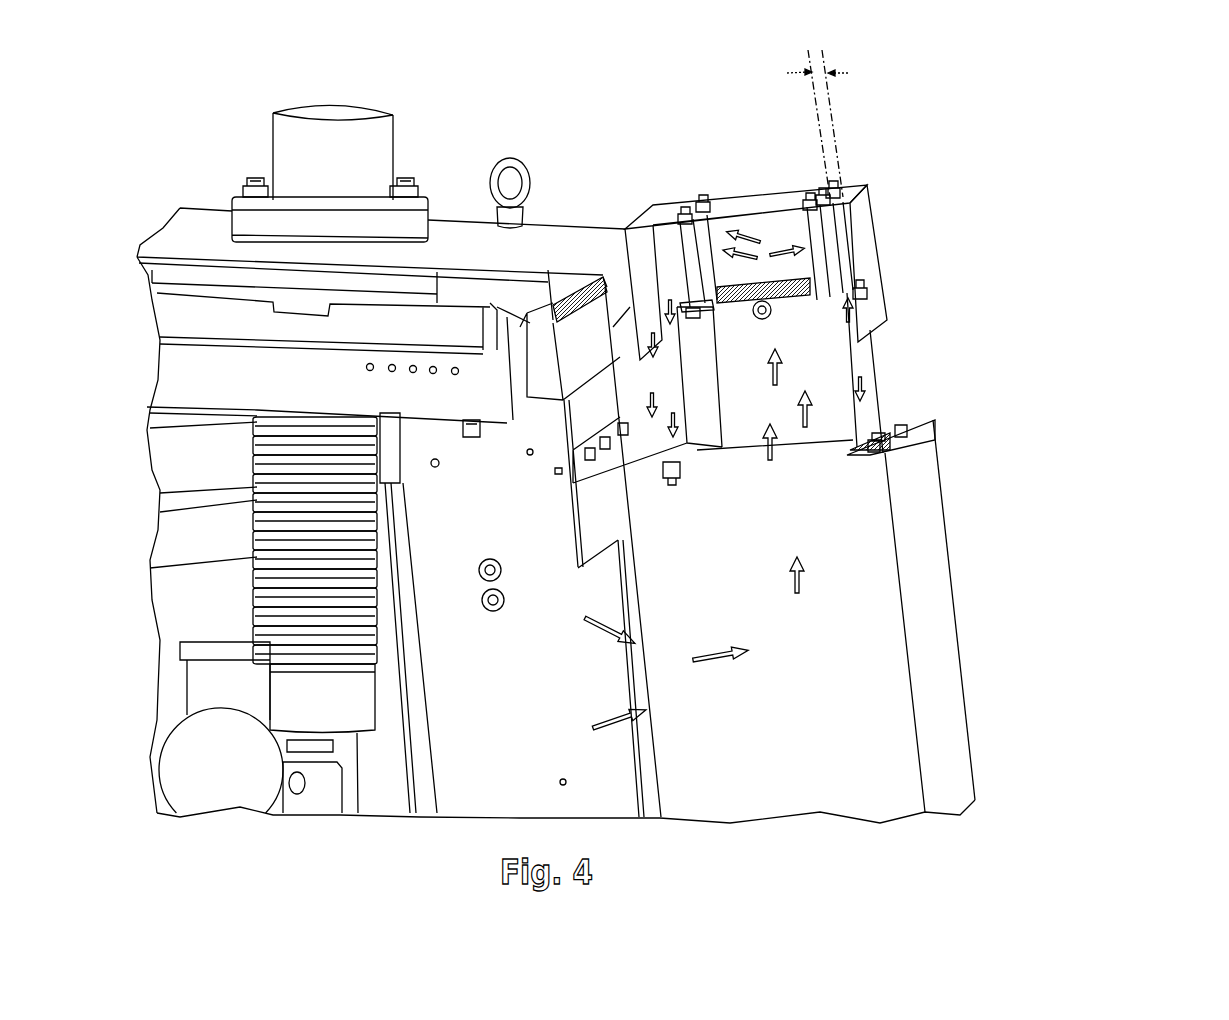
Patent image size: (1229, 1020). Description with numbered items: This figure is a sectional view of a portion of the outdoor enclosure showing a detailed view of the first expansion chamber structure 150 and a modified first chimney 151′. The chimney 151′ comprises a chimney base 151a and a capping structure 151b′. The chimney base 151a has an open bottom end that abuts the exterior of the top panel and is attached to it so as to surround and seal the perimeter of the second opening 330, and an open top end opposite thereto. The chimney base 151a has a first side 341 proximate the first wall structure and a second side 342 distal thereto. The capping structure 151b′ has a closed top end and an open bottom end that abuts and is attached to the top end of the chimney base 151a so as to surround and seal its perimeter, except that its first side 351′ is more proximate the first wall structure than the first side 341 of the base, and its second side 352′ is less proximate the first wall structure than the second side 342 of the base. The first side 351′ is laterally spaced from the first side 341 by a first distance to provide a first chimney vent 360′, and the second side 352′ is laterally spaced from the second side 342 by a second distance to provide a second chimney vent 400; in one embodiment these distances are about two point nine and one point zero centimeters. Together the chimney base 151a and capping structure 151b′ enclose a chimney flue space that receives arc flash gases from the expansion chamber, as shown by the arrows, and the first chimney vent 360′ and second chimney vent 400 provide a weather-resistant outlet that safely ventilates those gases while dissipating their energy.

The first expansion chamber structure 150 is at (1075, 615).
The first chimney 151′ is at (1085, 318).
The chimney base 151a is at (912, 370).
The capping structure 151b′ is at (912, 255).
The second opening 330 is at (803, 455).
The first side of chimney base 341 is at (700, 423).
The second side of chimney base 342 is at (870, 397).
The first side of capping structure 351′ is at (648, 270).
The second side of capping structure 352′ is at (863, 293).
The first chimney vent 360′ is at (683, 360).
The second chimney vent 400 is at (850, 307).